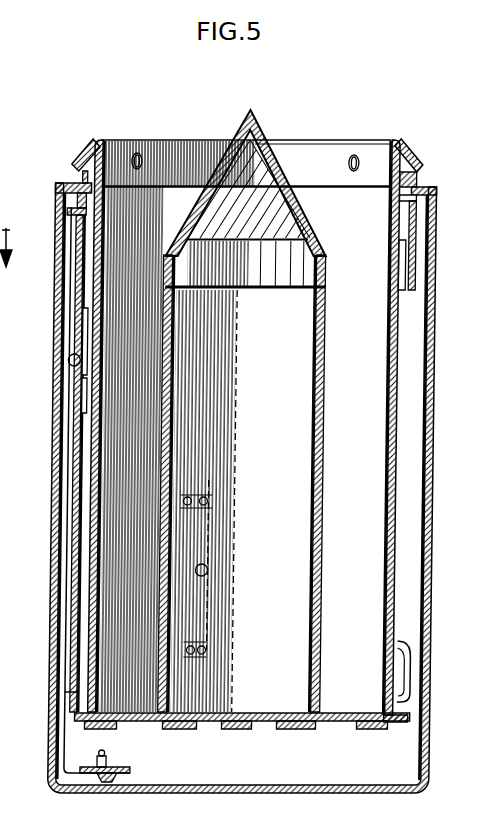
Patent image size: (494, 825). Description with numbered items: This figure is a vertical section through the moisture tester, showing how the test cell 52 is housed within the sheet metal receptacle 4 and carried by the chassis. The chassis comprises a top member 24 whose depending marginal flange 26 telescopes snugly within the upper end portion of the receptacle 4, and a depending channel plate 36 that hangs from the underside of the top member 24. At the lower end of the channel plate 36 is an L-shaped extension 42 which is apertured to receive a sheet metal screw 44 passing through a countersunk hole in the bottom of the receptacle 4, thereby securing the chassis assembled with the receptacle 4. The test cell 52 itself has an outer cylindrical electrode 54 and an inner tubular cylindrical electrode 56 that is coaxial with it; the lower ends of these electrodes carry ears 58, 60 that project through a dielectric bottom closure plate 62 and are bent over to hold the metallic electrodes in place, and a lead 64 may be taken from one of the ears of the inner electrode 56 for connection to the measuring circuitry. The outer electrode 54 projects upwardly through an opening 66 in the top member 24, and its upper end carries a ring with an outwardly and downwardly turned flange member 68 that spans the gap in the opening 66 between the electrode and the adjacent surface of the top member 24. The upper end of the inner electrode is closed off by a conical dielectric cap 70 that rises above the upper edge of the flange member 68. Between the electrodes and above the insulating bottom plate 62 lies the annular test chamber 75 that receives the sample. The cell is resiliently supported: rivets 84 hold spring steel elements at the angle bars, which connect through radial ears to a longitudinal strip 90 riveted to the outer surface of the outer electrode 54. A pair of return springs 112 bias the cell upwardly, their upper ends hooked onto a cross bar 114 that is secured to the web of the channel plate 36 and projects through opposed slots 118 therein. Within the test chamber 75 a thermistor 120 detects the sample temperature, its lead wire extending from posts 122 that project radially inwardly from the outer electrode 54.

The receptacle 4 is at (432, 562).
The top member 24 is at (68, 178).
The depending marginal flange 26 is at (440, 197).
The channel plate 36 is at (78, 483).
The L-shaped extension 42 is at (82, 776).
The sheet metal screw 44 is at (108, 776).
The test cell 52 is at (116, 138).
The outer cylindrical electrode 54 is at (386, 447).
The inner tubular cylindrical electrode 56 is at (315, 364).
The ears 58 is at (117, 729).
The ears 60 is at (188, 729).
The dielectric bottom closure plate 62 is at (335, 713).
The lead 64 is at (236, 730).
The opening 66 is at (392, 157).
The flange member 68 is at (414, 160).
The conical dielectric cap 70 is at (263, 133).
The annular test chamber 75 is at (100, 567).
The rivets 84 is at (68, 478).
The longitudinal strip 90 is at (12, 389).
The return springs 112 is at (411, 643).
The cross bar 114 is at (83, 345).
The slots 118 is at (83, 393).
The thermistor 120 is at (208, 570).
The posts 122 is at (205, 493).